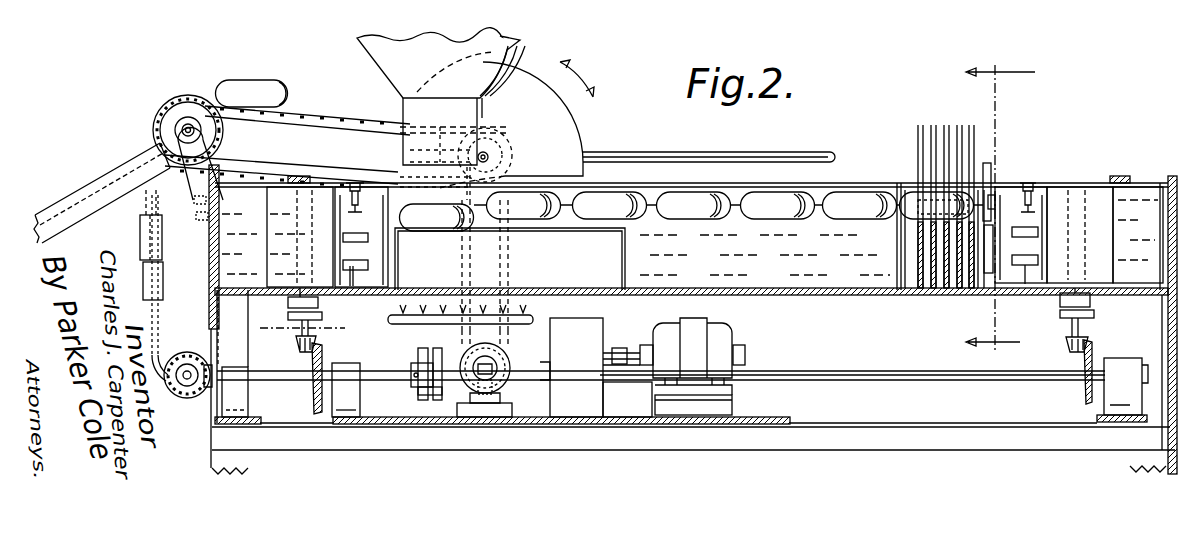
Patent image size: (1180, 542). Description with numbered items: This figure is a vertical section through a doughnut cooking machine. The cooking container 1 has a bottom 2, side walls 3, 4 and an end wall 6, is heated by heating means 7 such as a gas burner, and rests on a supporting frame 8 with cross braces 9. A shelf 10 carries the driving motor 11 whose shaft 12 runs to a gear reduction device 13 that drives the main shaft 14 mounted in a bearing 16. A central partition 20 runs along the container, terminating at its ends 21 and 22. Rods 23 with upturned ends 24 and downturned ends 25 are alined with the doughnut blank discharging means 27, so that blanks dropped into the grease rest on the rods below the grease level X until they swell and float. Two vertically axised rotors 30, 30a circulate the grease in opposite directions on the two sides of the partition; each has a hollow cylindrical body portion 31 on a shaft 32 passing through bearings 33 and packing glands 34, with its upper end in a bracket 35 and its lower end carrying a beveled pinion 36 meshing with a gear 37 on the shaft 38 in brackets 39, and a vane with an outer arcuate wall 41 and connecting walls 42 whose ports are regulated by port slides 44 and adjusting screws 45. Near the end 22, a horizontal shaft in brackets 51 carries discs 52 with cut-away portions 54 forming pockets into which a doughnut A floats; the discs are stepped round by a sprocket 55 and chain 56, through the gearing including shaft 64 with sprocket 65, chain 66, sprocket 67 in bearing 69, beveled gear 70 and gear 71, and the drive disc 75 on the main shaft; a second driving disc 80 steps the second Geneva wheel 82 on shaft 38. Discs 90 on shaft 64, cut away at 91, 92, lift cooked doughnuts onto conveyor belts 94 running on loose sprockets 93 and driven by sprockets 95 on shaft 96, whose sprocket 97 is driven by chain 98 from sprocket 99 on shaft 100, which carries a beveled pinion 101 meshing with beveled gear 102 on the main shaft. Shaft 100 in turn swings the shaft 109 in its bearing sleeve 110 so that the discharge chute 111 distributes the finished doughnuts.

The cooking container 1 is at (1178, 150).
The bottom 2 is at (840, 295).
The side wall 3 is at (186, 332).
The side wall 4 is at (1009, 213).
The end wall 6 is at (194, 208).
The heating means 7 is at (400, 324).
The supporting frame 8 is at (210, 462).
The cross braces 9 is at (830, 434).
The shelf 10 is at (633, 426).
The driving motor 11 is at (718, 337).
The shaft 12 is at (632, 348).
The gear reduction device 13 is at (573, 325).
The main shaft 14 is at (283, 380).
The bearing 16 is at (238, 360).
The central partition 20 is at (826, 190).
The end of partition 21 is at (398, 300).
The end of partition 22 is at (900, 183).
The rods 23 is at (590, 230).
The upturned ends 24 is at (437, 205).
The downturned ends 25 is at (630, 248).
The doughnut blank discharging means 27 is at (500, 40).
The rotor 30 is at (267, 232).
The rotor 30a is at (1120, 190).
The hollow cylindrical body portion 31 is at (267, 246).
The shaft 32 is at (300, 326).
The bearings 33 is at (288, 301).
The packing glands 34 is at (288, 316).
The bracket 35 is at (300, 176).
The beveled gear or pinion 36 is at (298, 347).
The gear 37 is at (313, 402).
The shaft 38 is at (875, 371).
The brackets 39 is at (352, 390).
The outer arcuate wall 41 is at (385, 238).
The walls 42 is at (362, 290).
The port slides 44 is at (352, 288).
The adjusting screws 45 is at (352, 183).
The brackets 51 is at (906, 270).
The discs 52 is at (946, 124).
The cut-away portions 54 is at (920, 222).
The sprocket 55 is at (996, 200).
The chain 56 is at (990, 185).
The shaft 64 is at (487, 154).
The sprocket 65 is at (503, 155).
The chain 66 is at (508, 334).
The sprocket 67 is at (490, 348).
The bearing 69 is at (490, 410).
The beveled gear 70 is at (482, 383).
The gear 71 is at (462, 378).
The drive disc 75 is at (438, 348).
The second driving disc 80 is at (411, 368).
The second Geneva wheel 82 is at (420, 392).
The discs 90 is at (572, 132).
The cut-away portion 91 is at (586, 172).
The cut-away portion 92 is at (405, 135).
The sprockets 93 is at (435, 163).
The conveyor belts or chains 94 is at (270, 134).
The sprockets 95 is at (176, 118).
The shaft 96 is at (188, 124).
The sprocket 97 is at (195, 164).
The chain or belt 98 is at (152, 298).
The sprocket 99 is at (180, 388).
The shaft 100 is at (184, 385).
The beveled pinion 101 is at (194, 382).
The beveled gear 102 is at (198, 361).
The shaft 109 is at (143, 282).
The bearing sleeve 110 is at (140, 232).
The discharge chute 111 is at (75, 210).
The doughnut A is at (250, 80).
The grease level X is at (744, 184).